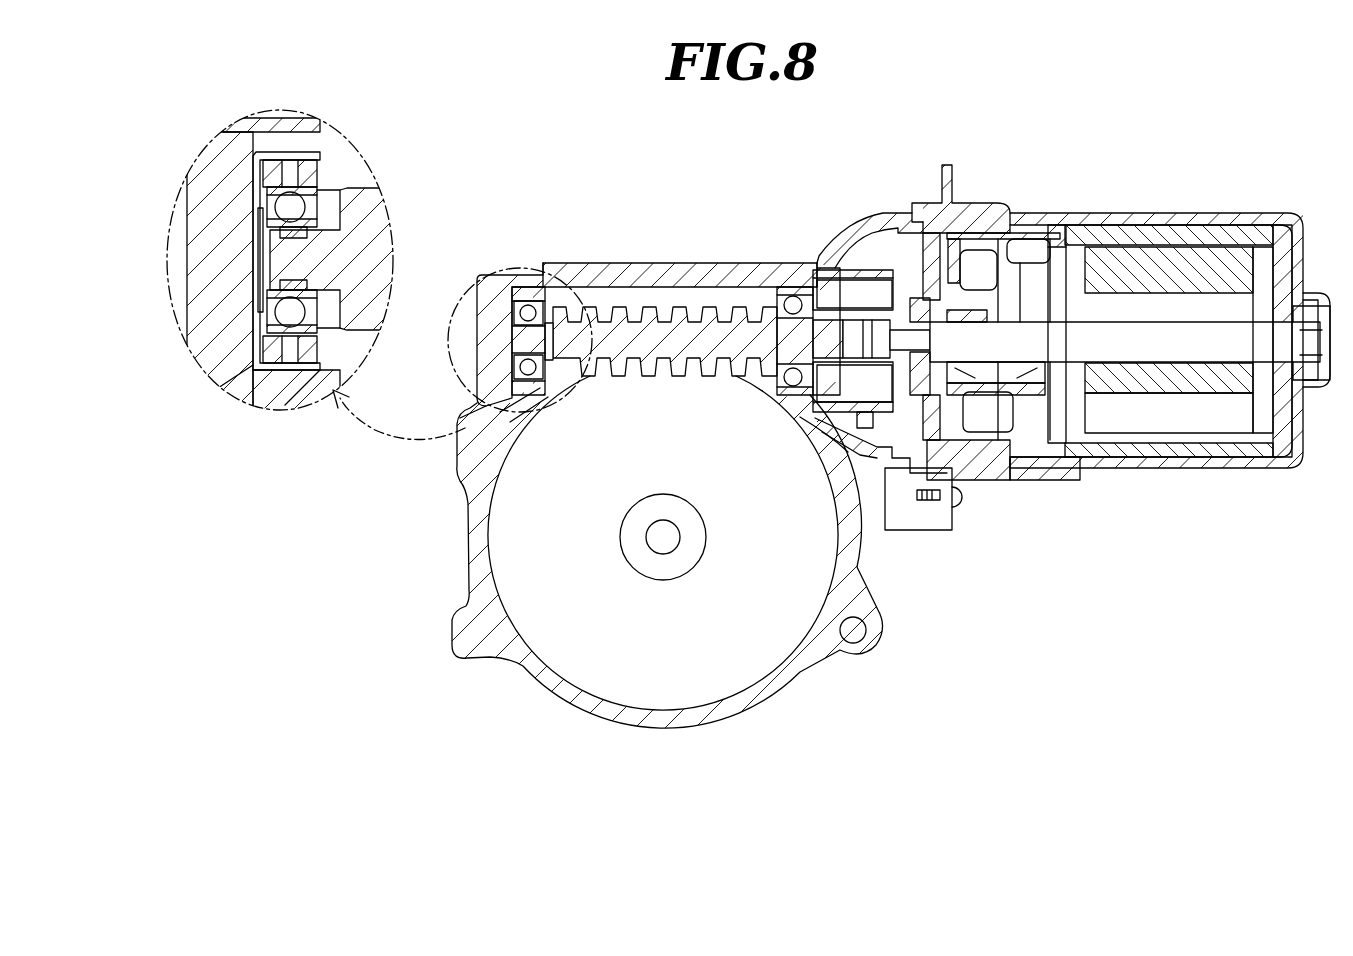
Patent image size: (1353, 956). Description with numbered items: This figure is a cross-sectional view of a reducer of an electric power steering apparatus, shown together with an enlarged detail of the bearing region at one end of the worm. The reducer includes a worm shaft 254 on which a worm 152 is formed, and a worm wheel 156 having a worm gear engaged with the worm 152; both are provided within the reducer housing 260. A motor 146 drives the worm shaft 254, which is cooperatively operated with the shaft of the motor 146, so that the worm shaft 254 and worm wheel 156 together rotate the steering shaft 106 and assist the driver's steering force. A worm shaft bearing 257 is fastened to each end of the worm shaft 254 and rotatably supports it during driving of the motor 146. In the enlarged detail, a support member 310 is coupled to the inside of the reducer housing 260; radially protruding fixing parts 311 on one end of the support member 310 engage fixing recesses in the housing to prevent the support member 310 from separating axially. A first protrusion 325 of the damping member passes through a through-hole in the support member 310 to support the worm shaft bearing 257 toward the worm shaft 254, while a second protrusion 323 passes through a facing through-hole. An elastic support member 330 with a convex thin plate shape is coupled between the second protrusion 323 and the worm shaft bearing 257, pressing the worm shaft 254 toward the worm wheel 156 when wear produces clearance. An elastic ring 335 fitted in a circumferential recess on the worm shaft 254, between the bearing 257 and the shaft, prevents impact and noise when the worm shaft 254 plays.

The motor 146 is at (1072, 188).
The worm 152 is at (647, 307).
The worm shaft 254 is at (937, 280).
The reducer housing 260 is at (738, 265).
The worm wheel 156 is at (744, 672).
The steering shaft 106 is at (663, 540).
The second protrusion 323 is at (297, 165).
The fixing parts 311 is at (283, 231).
The worm shaft bearing 257 is at (280, 203).
The elastic ring 335 is at (262, 215).
The support member 310 is at (320, 163).
The elastic support member 330 is at (335, 200).
The first protrusion 325 is at (320, 353).